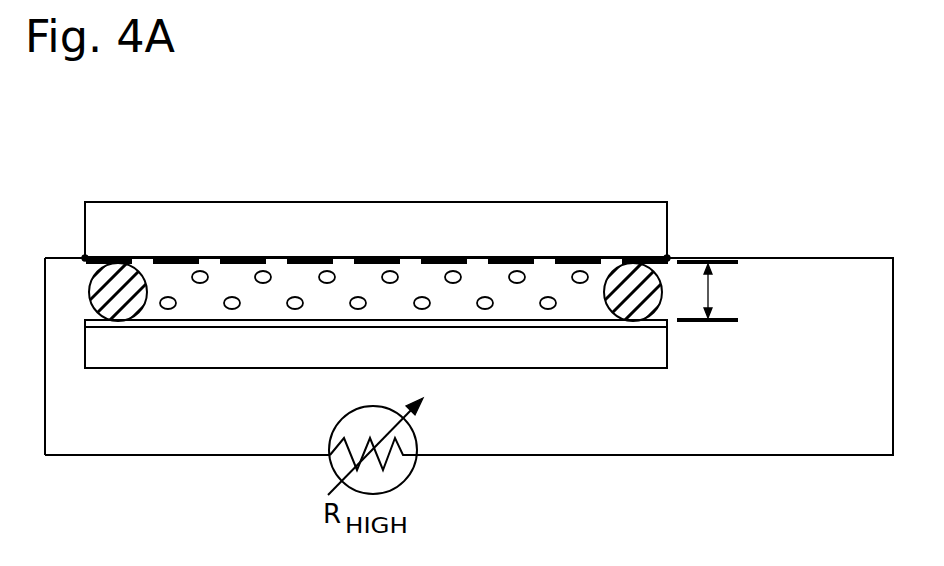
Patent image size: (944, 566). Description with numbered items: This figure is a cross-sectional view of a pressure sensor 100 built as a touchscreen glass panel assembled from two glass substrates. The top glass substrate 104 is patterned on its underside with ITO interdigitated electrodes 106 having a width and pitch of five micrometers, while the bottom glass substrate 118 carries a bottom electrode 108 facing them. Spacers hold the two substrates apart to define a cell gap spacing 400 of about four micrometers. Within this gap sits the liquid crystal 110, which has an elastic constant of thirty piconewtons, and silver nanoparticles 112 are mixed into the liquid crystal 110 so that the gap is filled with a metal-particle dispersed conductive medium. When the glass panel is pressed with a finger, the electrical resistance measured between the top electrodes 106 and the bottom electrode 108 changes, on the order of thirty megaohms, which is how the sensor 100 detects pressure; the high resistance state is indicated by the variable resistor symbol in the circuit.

The pressure sensor 100 is at (791, 87).
The top glass substrate 104 is at (493, 240).
The ITO interdigitated electrodes 106 is at (567, 260).
The bottom electrode 108 is at (667, 323).
The liquid crystal 110 is at (278, 288).
The Ag nanoparticles 112 is at (200, 270).
The bottom glass substrate 118 is at (397, 358).
The cell gap spacing 400 is at (708, 291).